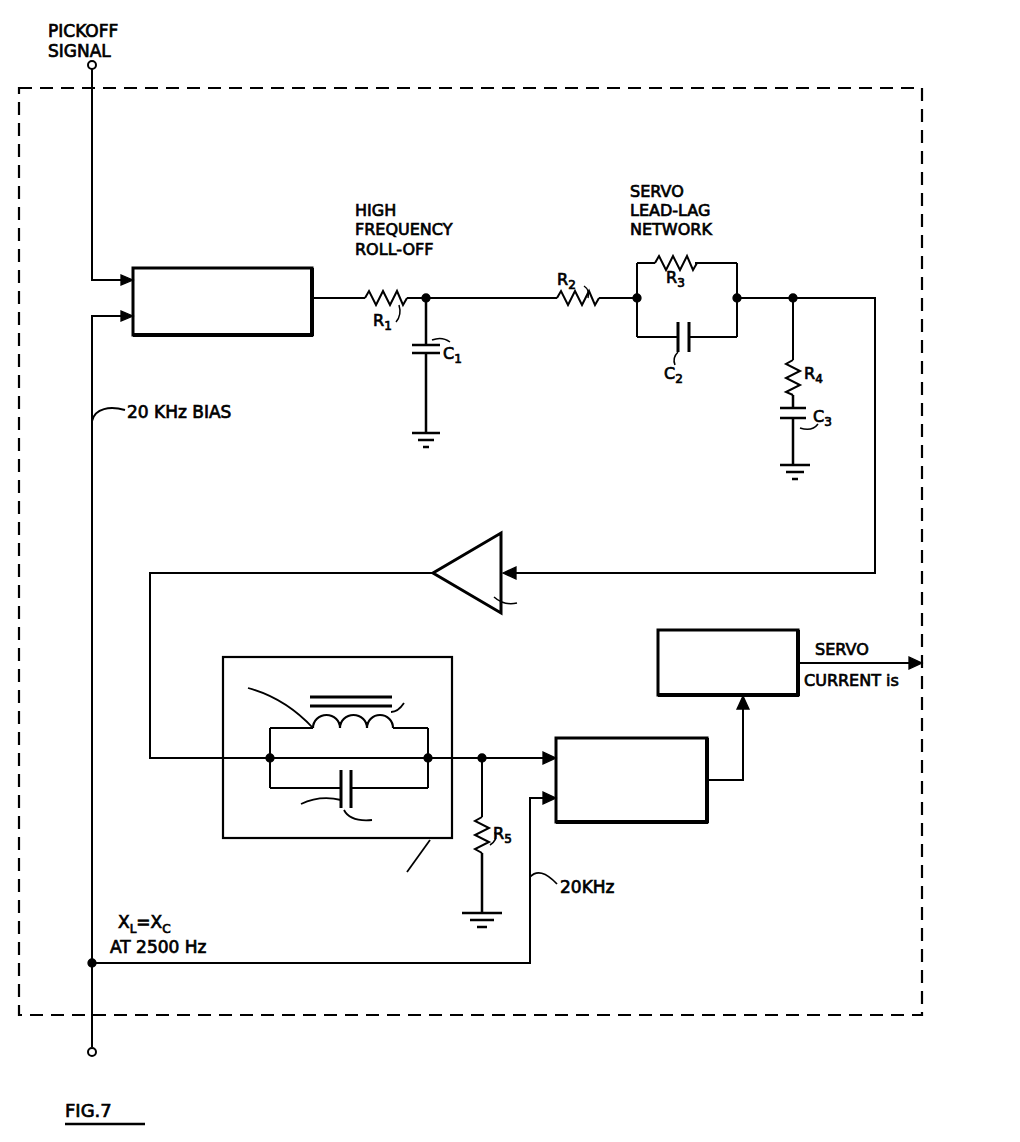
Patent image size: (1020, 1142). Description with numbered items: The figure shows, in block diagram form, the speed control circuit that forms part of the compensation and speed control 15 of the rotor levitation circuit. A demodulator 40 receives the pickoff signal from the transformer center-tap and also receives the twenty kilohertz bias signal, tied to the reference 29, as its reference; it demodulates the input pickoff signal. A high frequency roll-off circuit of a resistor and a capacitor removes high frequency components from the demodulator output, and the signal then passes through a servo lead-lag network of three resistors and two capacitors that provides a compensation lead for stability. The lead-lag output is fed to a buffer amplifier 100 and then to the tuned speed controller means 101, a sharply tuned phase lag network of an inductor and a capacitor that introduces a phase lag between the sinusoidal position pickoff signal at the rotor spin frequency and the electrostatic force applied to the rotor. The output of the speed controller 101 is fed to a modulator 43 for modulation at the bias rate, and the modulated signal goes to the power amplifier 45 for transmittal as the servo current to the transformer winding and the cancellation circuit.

The compensation and speed control 15 is at (438, 1024).
The reference 29 is at (150, 699).
The demodulator 40 is at (278, 322).
The modulator 43 is at (620, 757).
The power amplifier 45 is at (672, 660).
The buffer amplifier 100 is at (475, 568).
The tuned speed controller means 101 is at (243, 718).